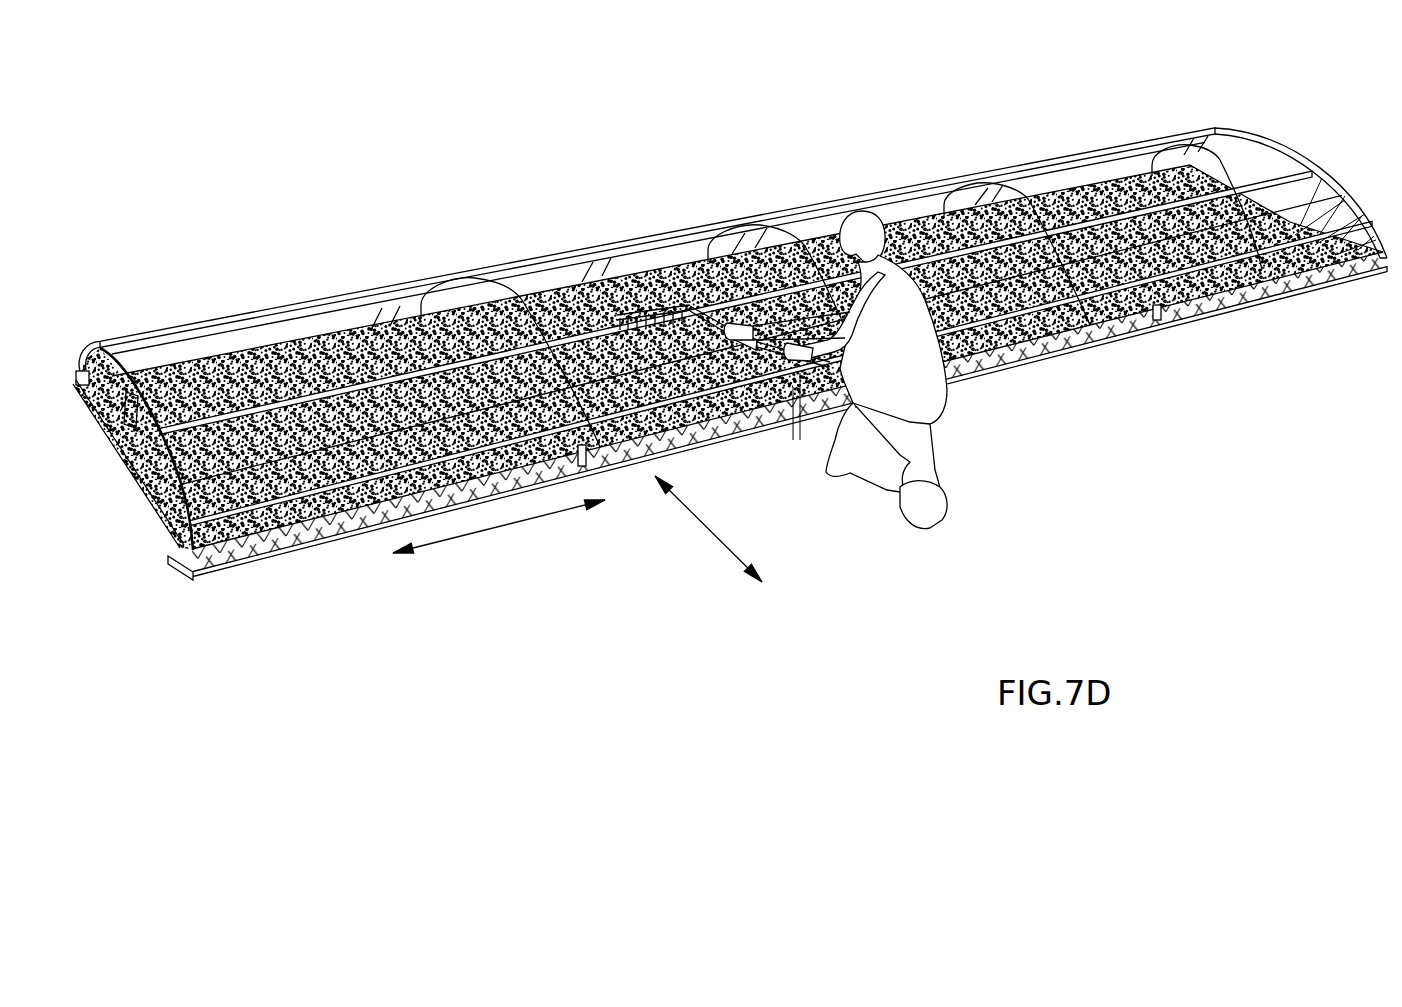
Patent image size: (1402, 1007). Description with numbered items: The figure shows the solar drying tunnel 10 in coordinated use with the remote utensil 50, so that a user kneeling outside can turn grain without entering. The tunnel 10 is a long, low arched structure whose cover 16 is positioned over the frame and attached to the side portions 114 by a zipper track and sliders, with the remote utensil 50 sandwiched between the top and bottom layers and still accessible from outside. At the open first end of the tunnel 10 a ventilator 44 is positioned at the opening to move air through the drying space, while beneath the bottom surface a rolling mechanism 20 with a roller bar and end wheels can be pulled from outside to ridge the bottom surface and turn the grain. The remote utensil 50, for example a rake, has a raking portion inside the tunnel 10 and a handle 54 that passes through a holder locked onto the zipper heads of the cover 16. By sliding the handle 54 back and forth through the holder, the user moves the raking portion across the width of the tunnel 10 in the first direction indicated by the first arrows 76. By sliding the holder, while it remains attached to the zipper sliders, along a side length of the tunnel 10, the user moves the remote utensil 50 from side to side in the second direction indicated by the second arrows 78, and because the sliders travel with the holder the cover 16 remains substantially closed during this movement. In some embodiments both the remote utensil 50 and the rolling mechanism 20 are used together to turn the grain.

The solar drying tunnel 10 is at (474, 172).
The cover 16 is at (238, 333).
The rolling mechanism 20 is at (292, 350).
The ventilator 44 is at (142, 433).
The side portions 114 is at (273, 522).
The second arrows 78 is at (498, 525).
The first arrows 76 is at (705, 530).
The remote utensil 50 is at (777, 402).
The handle 54 is at (801, 402).